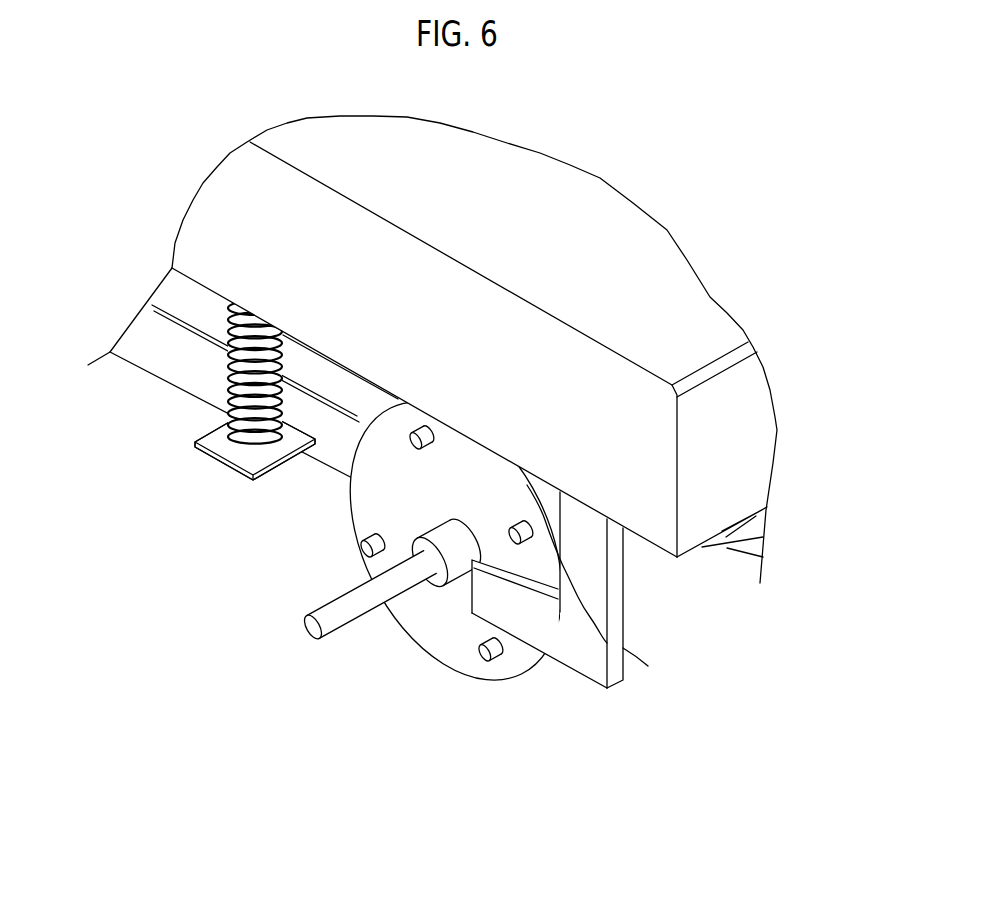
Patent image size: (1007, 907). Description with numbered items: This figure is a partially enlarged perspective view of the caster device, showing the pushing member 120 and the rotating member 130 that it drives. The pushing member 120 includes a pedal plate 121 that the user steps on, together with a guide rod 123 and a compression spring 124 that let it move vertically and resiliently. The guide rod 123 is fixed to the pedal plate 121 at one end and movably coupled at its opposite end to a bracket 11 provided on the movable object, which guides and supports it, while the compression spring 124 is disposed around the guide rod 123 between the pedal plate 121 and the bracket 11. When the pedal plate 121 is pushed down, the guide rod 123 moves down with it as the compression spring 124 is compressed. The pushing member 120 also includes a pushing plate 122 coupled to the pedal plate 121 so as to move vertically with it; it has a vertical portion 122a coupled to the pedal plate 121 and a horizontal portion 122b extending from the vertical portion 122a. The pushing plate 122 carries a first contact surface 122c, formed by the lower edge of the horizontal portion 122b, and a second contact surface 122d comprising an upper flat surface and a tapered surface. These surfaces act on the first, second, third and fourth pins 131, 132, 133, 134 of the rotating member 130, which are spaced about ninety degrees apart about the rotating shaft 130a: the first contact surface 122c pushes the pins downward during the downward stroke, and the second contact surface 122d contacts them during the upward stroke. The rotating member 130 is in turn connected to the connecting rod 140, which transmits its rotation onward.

The bracket 11 is at (227, 457).
The pushing member 120 is at (521, 452).
The pedal plate 121 is at (517, 349).
The pushing plate 122 is at (609, 637).
The vertical portion 122a is at (592, 552).
The horizontal portion 122b is at (530, 632).
The first contact surface 122c is at (585, 683).
The second contact surface 122d is at (533, 577).
The guide rod 123 is at (227, 382).
The compression spring 124 is at (227, 356).
The rotating member 130 is at (448, 650).
The rotating shaft 130a is at (310, 632).
The first pin 131 is at (625, 645).
The second pin 132 is at (488, 662).
The third pin 133 is at (362, 546).
The fourth pin 134 is at (408, 442).
The connecting rod 140 is at (148, 332).